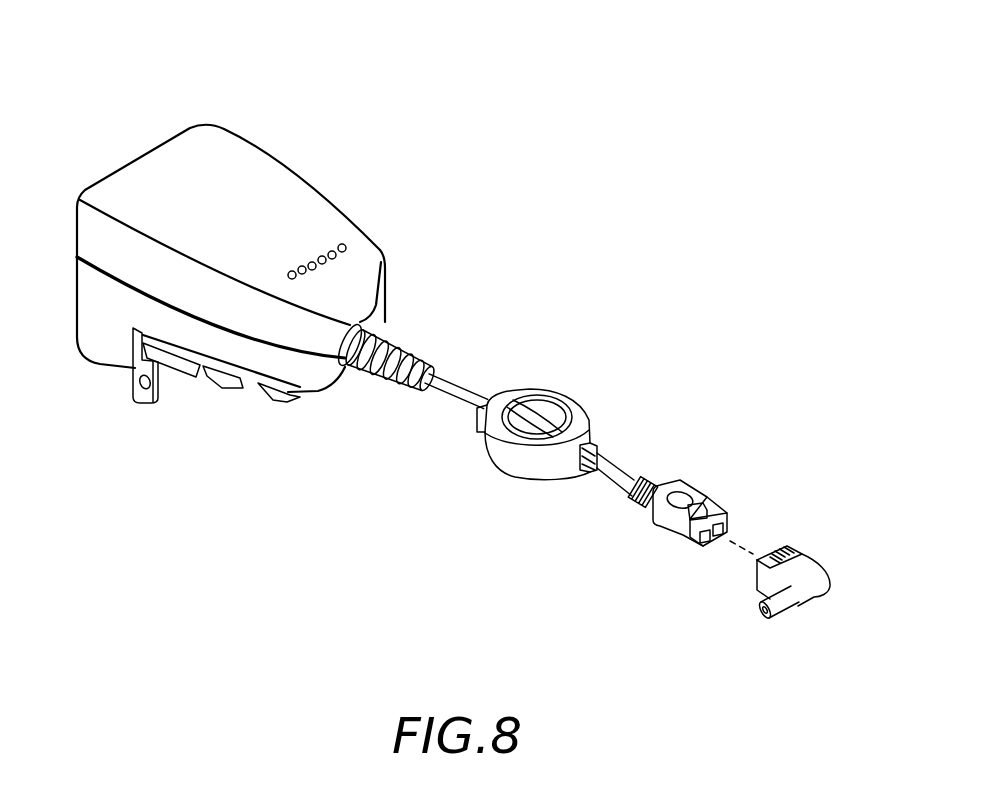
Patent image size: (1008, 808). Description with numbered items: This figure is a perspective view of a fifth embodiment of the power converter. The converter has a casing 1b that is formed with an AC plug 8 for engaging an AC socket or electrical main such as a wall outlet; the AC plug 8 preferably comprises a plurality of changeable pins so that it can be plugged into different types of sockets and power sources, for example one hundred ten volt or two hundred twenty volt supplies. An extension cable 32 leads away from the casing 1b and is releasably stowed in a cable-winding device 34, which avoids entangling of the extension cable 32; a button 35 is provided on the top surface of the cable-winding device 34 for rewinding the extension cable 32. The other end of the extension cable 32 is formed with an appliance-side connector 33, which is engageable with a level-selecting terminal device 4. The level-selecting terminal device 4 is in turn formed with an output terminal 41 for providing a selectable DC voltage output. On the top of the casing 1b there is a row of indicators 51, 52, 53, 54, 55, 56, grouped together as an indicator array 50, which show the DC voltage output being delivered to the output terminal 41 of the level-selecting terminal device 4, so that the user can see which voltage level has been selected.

The casing 1b is at (210, 157).
The LED indicator display 50 is at (393, 171).
The indicator 51 is at (289, 271).
The indicator 52 is at (302, 266).
The indicator 53 is at (312, 262).
The indicator 54 is at (323, 256).
The indicator 55 is at (334, 251).
The indicator 56 is at (414, 233).
The AC plug 8 is at (140, 396).
The extension cable 32 is at (460, 400).
The cable-winding device 34 is at (503, 432).
The button 35 is at (547, 427).
The appliance-side connector 33 is at (680, 510).
The level-selecting terminal device 4 is at (819, 578).
The output terminal 41 is at (781, 612).